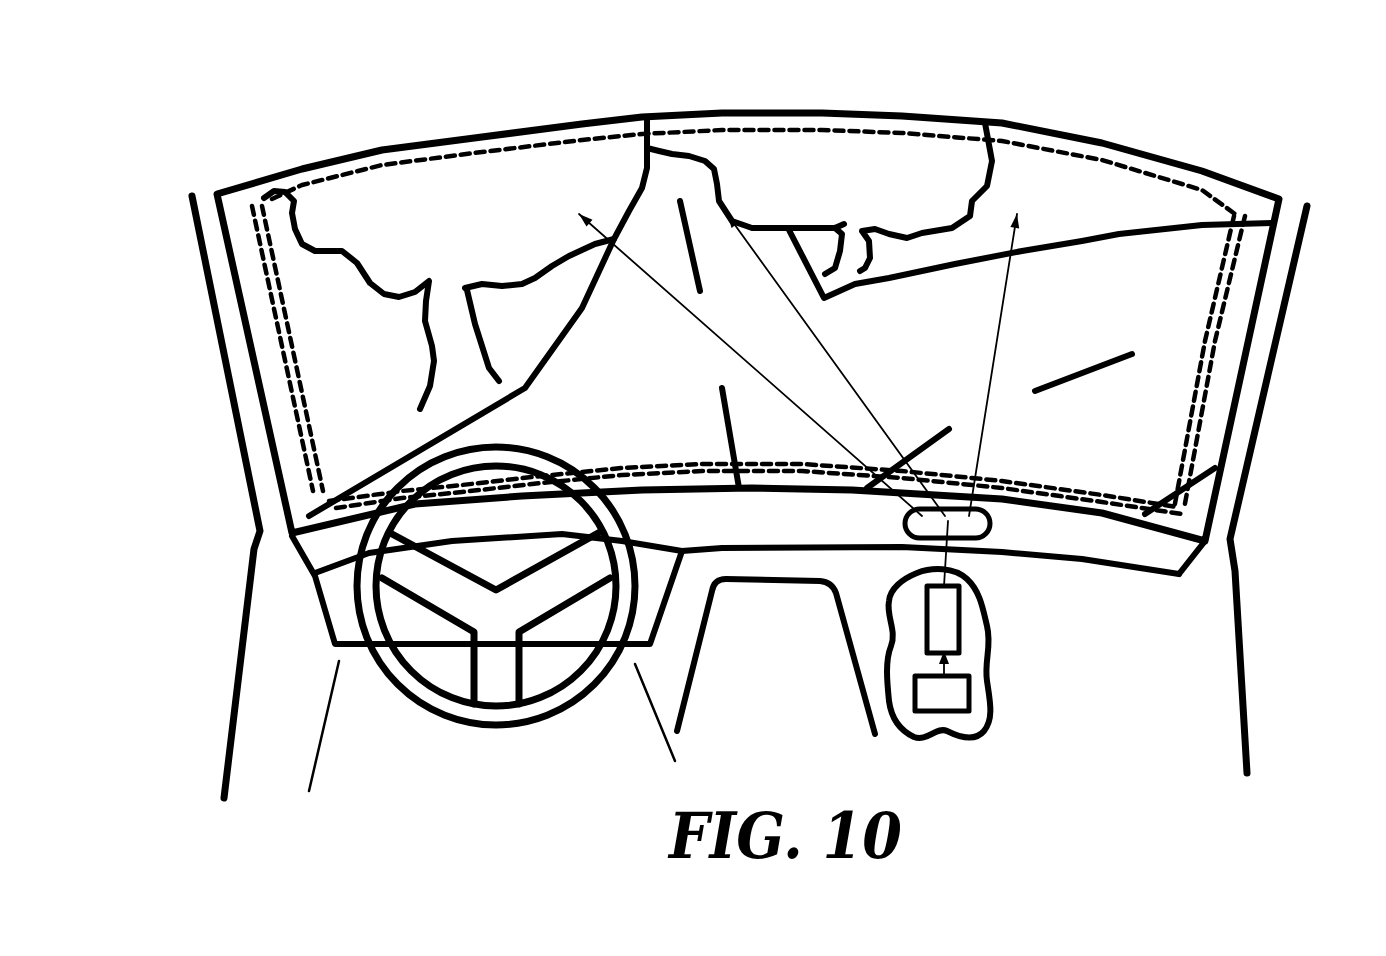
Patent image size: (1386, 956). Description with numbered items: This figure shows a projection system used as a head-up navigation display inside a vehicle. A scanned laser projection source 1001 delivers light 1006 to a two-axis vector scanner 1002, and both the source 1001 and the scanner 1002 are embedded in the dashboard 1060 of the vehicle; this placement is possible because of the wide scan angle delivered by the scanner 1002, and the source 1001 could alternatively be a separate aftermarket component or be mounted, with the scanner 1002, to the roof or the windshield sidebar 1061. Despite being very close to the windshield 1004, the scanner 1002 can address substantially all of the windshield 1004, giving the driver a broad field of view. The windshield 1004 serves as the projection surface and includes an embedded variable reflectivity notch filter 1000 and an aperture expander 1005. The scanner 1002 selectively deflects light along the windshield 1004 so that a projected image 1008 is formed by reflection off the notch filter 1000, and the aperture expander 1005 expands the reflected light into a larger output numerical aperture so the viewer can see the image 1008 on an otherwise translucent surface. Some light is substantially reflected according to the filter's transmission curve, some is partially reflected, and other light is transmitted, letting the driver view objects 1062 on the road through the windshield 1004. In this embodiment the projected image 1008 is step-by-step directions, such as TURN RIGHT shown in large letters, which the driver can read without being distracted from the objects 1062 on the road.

The variable reflectivity notch filter 1000 is at (262, 252).
The scanned laser projection source 1001 is at (953, 692).
The two-axis vector scanner 1002 is at (942, 627).
The windshield 1004 is at (1133, 145).
The aperture expander 1005 is at (380, 163).
The light 1006 is at (930, 667).
The projected image 1008 is at (753, 163).
The dashboard 1060 is at (1058, 530).
The windshield sidebar 1061 is at (1247, 403).
The objects 1062 is at (457, 363).